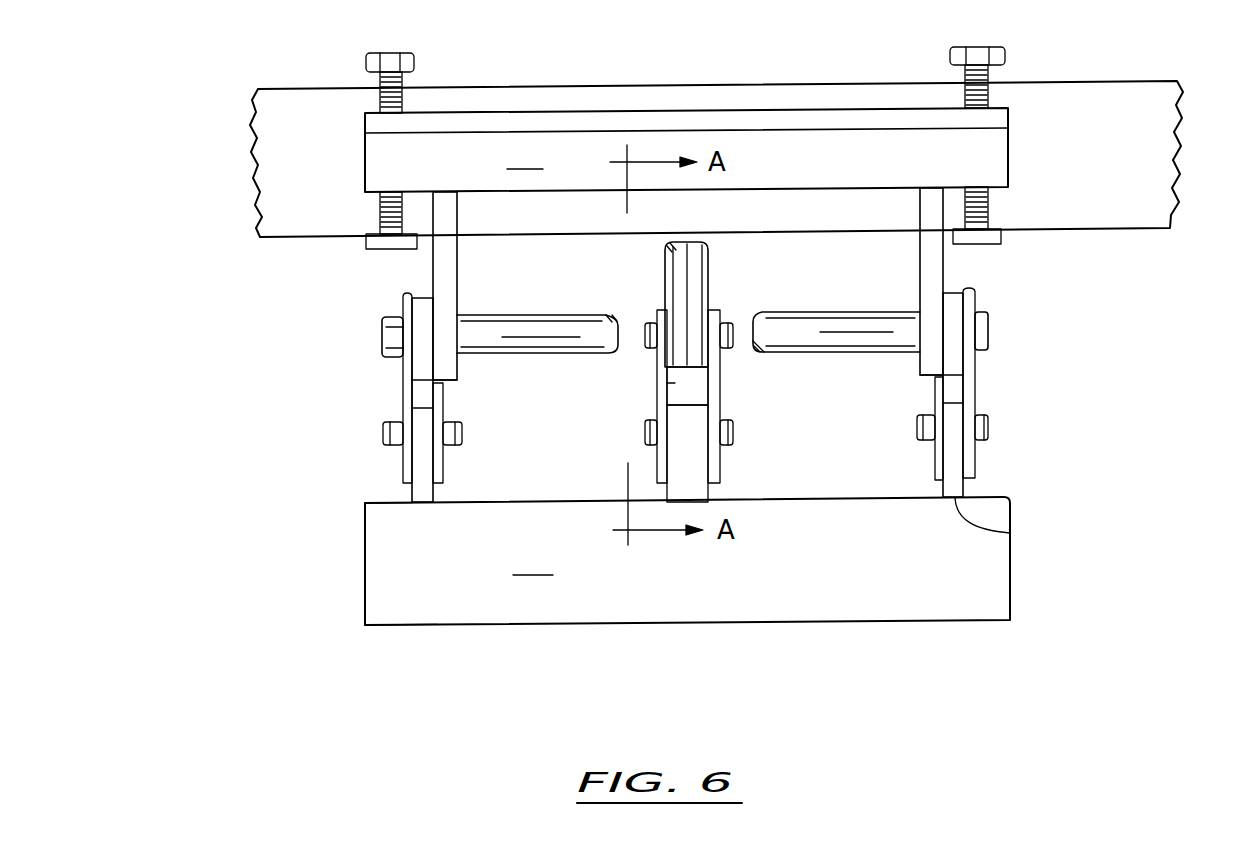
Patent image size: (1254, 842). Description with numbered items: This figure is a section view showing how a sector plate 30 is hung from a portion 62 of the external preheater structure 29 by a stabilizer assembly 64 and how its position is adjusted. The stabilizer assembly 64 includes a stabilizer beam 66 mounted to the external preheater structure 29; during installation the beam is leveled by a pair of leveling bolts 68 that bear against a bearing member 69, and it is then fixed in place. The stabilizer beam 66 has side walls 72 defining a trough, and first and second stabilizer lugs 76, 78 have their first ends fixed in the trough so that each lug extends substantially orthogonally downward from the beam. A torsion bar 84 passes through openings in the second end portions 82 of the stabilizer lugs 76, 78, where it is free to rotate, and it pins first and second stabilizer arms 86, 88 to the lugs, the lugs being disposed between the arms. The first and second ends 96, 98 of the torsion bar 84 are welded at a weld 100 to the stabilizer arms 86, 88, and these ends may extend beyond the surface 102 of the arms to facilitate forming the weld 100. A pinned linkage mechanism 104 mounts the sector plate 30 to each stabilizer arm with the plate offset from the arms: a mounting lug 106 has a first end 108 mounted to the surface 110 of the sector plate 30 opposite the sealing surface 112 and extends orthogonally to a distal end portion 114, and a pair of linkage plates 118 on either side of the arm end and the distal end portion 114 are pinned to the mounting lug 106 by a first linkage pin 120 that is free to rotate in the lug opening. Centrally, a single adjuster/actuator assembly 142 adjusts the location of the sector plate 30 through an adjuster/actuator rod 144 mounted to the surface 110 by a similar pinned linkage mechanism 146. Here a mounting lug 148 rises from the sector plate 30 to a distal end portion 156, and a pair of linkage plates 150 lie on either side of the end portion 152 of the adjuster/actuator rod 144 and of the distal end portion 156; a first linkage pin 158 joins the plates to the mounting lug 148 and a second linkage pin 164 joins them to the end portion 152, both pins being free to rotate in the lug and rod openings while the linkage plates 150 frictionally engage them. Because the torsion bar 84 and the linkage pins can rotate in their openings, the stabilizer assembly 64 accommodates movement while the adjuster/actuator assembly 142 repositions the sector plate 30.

The external preheater structure 29 is at (260, 210).
The sector plate 30 is at (687, 561).
The portion of the external preheater structure 62 is at (287, 88).
The stabilizer assembly 64 is at (1112, 303).
The stabilizer beam 66 is at (797, 135).
The leveling bolts 68 is at (392, 52).
The bearing member 69 is at (362, 242).
The side walls 72 is at (686, 150).
The first stabilizer lug 76 is at (922, 253).
The second stabilizer lug 78 is at (458, 250).
The second end portion of stabilizer lug 82 is at (448, 377).
The torsion bar 84 is at (845, 318).
The first stabilizer arm 86 is at (950, 293).
The second stabilizer arm 88 is at (422, 302).
The first end of torsion bar 96 is at (988, 333).
The second end of torsion bar 98 is at (383, 343).
The weld 100 is at (403, 330).
The surface of stabilizer arm 102 is at (403, 310).
The pinned linkage mechanism 104 is at (1132, 418).
The mounting lug 106 is at (968, 487).
The first end of mounting lug 108 is at (1010, 532).
The surface of sector plate 110 is at (385, 503).
The sealing surface 112 is at (437, 627).
The distal end portion of mounting lug 114 is at (957, 403).
The linkage plates 118 is at (398, 468).
The first linkage pin 120 is at (385, 423).
The adjuster/actuator assembly 142 is at (640, 268).
The adjuster/actuator rod 144 is at (708, 262).
The pinned linkage mechanism 146 is at (766, 402).
The mounting lug 148 is at (692, 490).
The linkage plates 150 is at (660, 465).
The end portion of adjuster/actuator rod 152 is at (667, 383).
The distal end portion of mounting lug 156 is at (692, 420).
The first linkage pin 158 is at (645, 432).
The second linkage pin 164 is at (645, 323).